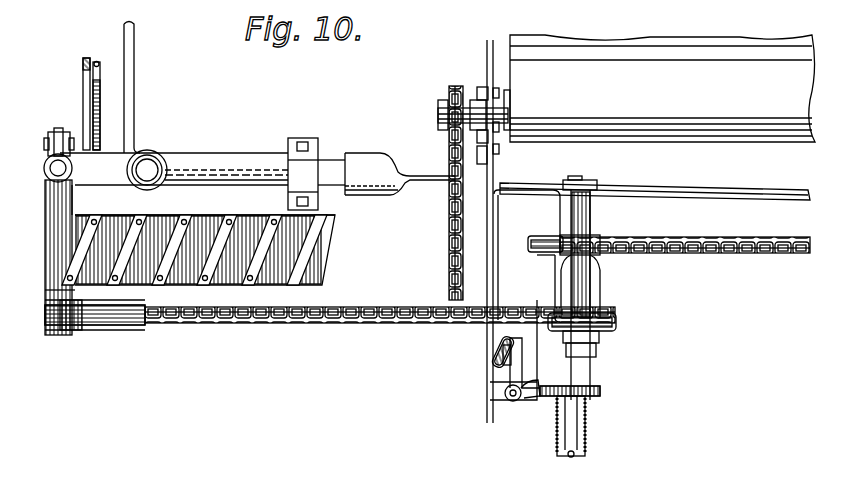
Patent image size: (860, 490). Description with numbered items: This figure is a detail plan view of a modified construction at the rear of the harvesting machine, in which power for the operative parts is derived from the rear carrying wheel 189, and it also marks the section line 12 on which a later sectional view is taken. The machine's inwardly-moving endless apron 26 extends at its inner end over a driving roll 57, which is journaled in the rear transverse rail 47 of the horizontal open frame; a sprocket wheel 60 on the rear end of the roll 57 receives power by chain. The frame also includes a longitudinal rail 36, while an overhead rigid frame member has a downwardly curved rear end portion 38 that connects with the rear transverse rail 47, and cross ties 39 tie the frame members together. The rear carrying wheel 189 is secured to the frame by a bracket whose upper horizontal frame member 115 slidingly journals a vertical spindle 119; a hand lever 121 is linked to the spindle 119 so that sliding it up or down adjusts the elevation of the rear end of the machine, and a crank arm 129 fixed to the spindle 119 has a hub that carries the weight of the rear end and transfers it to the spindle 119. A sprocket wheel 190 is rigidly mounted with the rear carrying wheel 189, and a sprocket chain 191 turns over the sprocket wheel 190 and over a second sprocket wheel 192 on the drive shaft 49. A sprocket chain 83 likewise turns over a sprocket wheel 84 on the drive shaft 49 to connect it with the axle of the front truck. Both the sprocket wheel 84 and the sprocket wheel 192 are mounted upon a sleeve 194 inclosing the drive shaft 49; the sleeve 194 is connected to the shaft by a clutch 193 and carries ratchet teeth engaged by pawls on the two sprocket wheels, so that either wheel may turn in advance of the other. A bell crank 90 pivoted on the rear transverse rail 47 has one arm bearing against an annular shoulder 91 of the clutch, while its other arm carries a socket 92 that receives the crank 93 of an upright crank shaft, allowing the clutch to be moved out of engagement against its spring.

The hand lever 121 is at (100, 49).
The vertical spindle 119 is at (62, 152).
The cross ties 39 is at (134, 130).
The downwardly curved rear end portion 38 is at (190, 151).
The upper horizontal frame member 115 is at (125, 170).
The crank arm 129 is at (72, 208).
The rear carrying wheel 189 is at (335, 243).
The sprocket wheel 190 is at (168, 361).
The sprocket chain 191 is at (272, 357).
The sprocket wheel 60 is at (449, 100).
The driving roll 57 is at (470, 106).
The rear transverse rail 47 is at (487, 293).
The endless apron 26 is at (659, 88).
The longitudinal rail 36 is at (746, 180).
The section line 12— 12 is at (562, 173).
The sprocket wheel 84 is at (543, 252).
The sprocket chain 83 is at (748, 242).
The second sprocket wheel 192 is at (660, 311).
The sleeve 194 is at (654, 357).
The clutch 193 is at (654, 377).
The socket 92 is at (570, 352).
The crank 93 is at (492, 350).
The bell crank 90 is at (520, 399).
The annular shoulder 91 is at (598, 391).
The drive shaft 49 is at (620, 458).